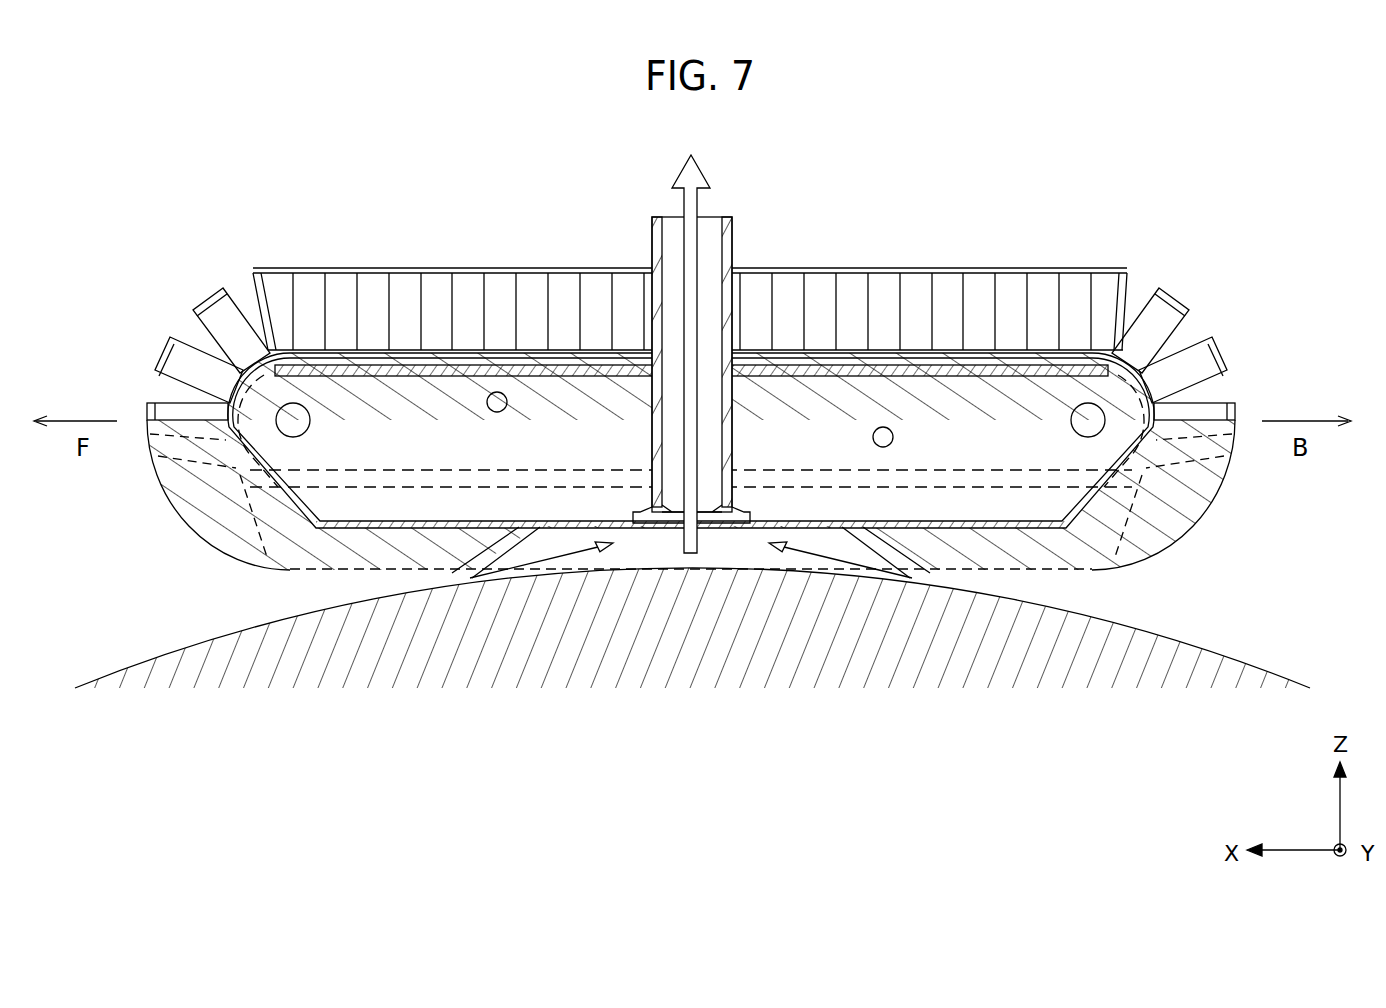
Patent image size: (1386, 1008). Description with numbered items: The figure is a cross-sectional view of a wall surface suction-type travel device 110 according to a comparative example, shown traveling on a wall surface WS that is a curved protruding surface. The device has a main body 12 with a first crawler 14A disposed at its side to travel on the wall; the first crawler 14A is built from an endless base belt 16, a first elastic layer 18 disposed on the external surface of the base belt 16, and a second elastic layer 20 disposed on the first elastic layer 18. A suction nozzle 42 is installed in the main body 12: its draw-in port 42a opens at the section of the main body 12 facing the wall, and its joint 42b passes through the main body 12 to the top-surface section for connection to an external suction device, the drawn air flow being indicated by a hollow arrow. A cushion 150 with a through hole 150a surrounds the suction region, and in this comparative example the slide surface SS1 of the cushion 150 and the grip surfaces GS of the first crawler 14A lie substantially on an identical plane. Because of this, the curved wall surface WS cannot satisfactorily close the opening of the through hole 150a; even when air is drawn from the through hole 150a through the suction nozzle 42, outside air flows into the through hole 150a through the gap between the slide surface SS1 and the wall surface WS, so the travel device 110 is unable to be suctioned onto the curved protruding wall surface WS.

The wall surface suction-type travel device 110 is at (687, 444).
The first crawler 14A is at (691, 288).
The second elastic layer 20 is at (598, 270).
The first elastic layer 18 is at (612, 327).
The base belt 16 is at (592, 358).
The main body 12 is at (987, 448).
The suction nozzle 42 is at (685, 444).
The draw-in port 42a is at (715, 523).
The joint 42b is at (732, 227).
The cushion 150 is at (455, 563).
The through hole 150a is at (691, 556).
The wall surface WS is at (197, 642).
The grip surfaces GS is at (950, 573).
The slide surface SS1 is at (1043, 572).